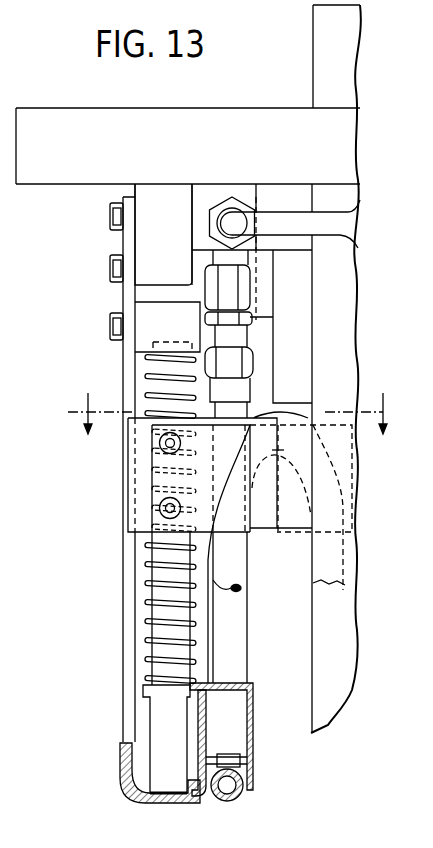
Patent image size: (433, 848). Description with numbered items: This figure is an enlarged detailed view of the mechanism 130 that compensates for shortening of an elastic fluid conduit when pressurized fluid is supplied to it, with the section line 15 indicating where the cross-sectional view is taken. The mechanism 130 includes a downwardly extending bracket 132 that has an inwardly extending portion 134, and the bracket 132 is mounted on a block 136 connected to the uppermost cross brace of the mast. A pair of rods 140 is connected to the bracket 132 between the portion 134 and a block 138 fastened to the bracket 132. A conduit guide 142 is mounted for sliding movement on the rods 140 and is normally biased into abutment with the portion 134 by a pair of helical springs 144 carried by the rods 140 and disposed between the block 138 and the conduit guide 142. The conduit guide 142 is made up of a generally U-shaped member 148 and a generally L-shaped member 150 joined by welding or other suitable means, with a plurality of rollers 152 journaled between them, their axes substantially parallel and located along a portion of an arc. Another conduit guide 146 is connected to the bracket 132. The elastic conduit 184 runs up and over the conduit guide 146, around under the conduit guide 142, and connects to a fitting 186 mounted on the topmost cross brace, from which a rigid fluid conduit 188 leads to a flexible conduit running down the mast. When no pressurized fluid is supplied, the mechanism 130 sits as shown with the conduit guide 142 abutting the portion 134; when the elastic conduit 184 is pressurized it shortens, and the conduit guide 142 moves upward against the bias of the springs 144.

The section line 15 is at (238, 413).
The mechanism 130 is at (116, 499).
The bracket 132 is at (128, 563).
The inwardly extending portion 134 is at (197, 803).
The block 136 is at (148, 232).
The block 138 is at (145, 316).
The rods 140 is at (170, 713).
The conduit guide 142 is at (207, 739).
The helical springs 144 is at (157, 625).
The conduit guide 146 is at (274, 554).
The U-shaped member 148 is at (202, 737).
The L-shaped member 150 is at (256, 750).
The rollers 152 is at (230, 758).
The elastic conduit 184 is at (233, 643).
The fitting 186 is at (208, 283).
The rigid fluid conduit 188 is at (333, 228).